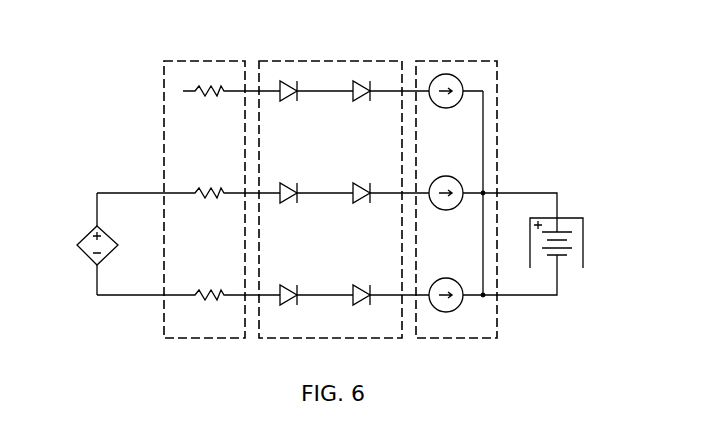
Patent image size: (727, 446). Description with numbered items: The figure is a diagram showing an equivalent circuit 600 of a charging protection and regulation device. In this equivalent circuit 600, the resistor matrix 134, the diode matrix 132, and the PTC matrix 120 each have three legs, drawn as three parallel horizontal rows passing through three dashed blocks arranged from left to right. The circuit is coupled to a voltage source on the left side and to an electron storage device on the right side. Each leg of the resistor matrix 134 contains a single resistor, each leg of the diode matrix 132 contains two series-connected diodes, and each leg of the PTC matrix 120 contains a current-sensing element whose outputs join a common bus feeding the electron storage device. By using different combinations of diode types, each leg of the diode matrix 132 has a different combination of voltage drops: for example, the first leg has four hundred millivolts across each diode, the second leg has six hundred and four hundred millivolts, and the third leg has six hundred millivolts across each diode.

The equivalent circuit 600 is at (538, 53).
The resistor matrix 134 is at (210, 339).
The diode matrix 132 is at (343, 339).
The PTC matrix 120 is at (468, 339).